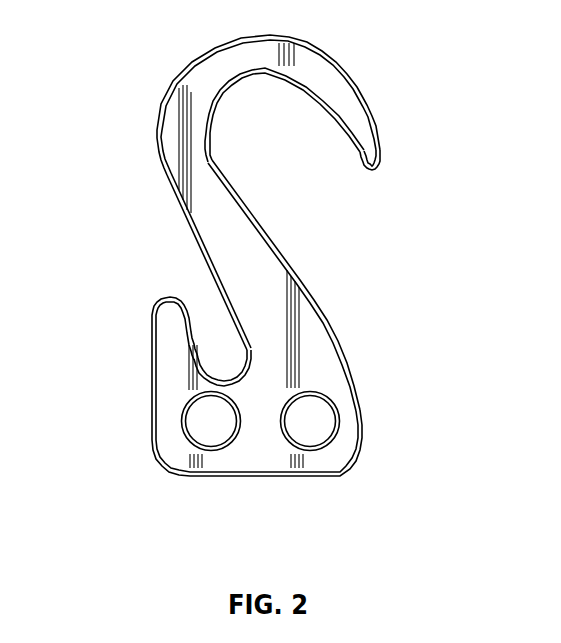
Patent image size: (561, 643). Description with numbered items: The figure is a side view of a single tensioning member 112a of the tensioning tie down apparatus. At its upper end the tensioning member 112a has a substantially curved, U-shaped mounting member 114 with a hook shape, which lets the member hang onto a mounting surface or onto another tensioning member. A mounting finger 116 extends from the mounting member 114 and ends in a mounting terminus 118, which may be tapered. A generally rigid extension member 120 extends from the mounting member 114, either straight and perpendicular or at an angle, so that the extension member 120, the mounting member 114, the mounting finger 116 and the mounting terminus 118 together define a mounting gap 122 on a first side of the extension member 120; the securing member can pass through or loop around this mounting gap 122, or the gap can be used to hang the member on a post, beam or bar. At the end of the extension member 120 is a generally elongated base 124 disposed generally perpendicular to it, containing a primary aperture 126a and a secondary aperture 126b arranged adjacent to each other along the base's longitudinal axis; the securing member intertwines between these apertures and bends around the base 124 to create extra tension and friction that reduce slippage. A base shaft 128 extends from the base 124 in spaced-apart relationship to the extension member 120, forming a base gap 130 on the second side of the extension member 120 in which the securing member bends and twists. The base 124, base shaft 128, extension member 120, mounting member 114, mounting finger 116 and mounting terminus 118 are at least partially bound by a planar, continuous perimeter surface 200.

The perimeter surface 200 is at (268, 278).
The first tensioning member 112a is at (325, 293).
The mounting member 114 is at (266, 63).
The mounting finger 116 is at (349, 74).
The mounting terminus 118 is at (363, 142).
The extension member 120 is at (243, 238).
The mounting gap 122 is at (320, 172).
The base 124 is at (273, 457).
The primary aperture 126a is at (183, 437).
The secondary aperture 126b is at (339, 437).
The base shaft 128 is at (163, 340).
The base gap 130 is at (188, 300).